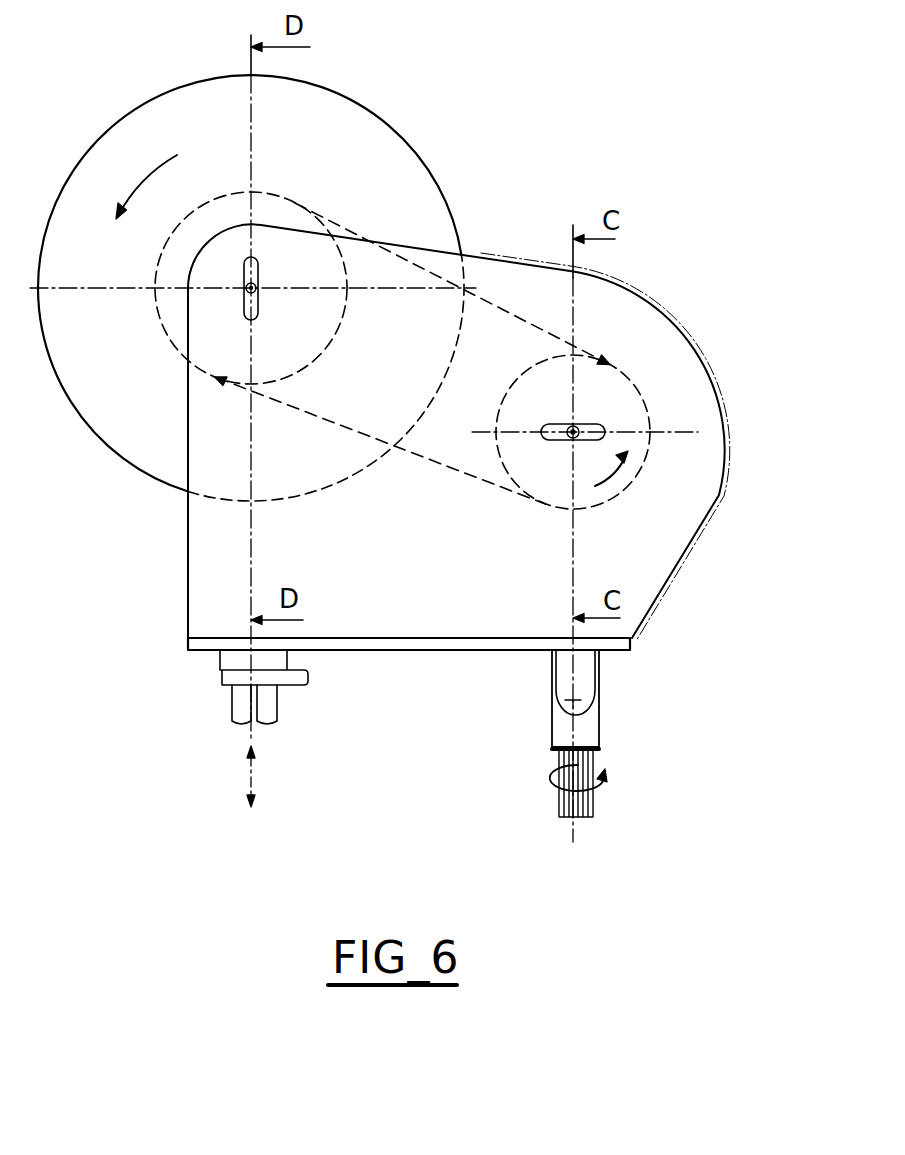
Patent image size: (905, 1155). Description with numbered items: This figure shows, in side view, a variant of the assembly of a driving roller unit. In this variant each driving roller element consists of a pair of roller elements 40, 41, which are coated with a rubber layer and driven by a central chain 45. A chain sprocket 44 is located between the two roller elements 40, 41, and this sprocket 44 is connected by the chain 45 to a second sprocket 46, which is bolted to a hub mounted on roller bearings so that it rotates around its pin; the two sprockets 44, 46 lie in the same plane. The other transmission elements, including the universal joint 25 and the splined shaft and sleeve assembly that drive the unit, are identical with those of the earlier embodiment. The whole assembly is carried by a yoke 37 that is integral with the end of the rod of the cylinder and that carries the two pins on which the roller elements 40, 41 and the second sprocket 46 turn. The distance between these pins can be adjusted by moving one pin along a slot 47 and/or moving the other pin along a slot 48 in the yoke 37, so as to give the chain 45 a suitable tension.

The universal joint 25 is at (588, 723).
The yoke 37 is at (433, 618).
The roller element 40 is at (261, 277).
The roller element 41 is at (353, 128).
The chain sprocket 44 is at (287, 213).
The chain 45 is at (507, 307).
The second sprocket 46 is at (607, 388).
The slot 47 is at (247, 305).
The slot 48 is at (593, 423).